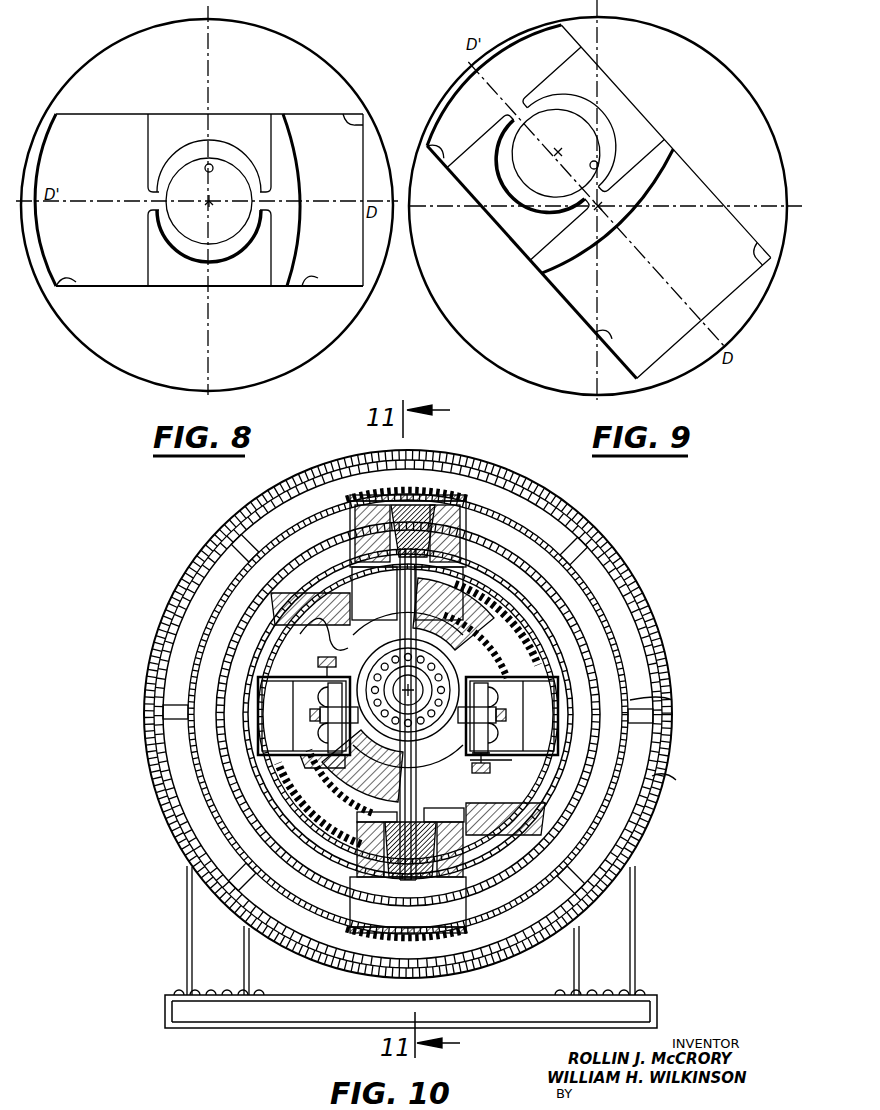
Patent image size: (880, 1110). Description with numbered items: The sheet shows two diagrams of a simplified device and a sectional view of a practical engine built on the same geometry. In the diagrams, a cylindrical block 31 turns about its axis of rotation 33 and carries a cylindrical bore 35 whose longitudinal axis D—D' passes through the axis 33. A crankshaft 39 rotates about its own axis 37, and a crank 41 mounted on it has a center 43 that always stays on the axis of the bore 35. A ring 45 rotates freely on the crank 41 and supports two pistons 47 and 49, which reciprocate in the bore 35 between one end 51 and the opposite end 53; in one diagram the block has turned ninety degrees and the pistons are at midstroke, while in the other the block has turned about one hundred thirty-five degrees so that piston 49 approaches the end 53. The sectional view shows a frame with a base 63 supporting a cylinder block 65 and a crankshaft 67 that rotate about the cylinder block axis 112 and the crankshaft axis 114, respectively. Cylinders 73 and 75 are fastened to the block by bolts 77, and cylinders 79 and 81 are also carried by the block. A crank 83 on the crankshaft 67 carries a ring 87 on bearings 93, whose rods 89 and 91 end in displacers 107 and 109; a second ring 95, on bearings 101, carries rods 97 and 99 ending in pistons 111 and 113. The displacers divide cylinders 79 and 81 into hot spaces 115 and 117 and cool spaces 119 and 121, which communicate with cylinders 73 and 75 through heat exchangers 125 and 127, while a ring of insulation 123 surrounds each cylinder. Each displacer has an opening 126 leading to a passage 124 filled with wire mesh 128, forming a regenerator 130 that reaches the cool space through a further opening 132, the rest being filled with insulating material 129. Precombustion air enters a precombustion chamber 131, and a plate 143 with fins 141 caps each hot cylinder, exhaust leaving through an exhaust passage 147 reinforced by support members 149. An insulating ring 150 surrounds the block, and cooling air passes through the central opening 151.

In FIG. 8, the cylindrical block 31 is at (333, 52).
In FIG. 9, the cylindrical block 31 is at (727, 60).
In FIG. 8, the axis of rotation 33 is at (211, 205).
In FIG. 9, the axis of rotation 33 is at (601, 208).
In FIG. 8, the cylindrical bore 35 is at (308, 292).
In FIG. 9, the cylindrical bore 35 is at (580, 302).
In FIG. 8, the axis of rotation of the crankshaft 37 is at (213, 163).
In FIG. 9, the axis of rotation of the crankshaft 37 is at (603, 165).
In FIG. 8, the crankshaft 39 is at (205, 166).
In FIG. 9, the crankshaft 39 is at (591, 169).
In FIG. 8, the crank 41 is at (268, 186).
In FIG. 9, the crank 41 is at (517, 178).
In FIG. 8, the center of the crank 43 is at (209, 203).
In FIG. 9, the center of the crank 43 is at (585, 143).
In FIG. 8, the ring 45 is at (200, 250).
In FIG. 9, the ring 45 is at (625, 122).
In FIG. 8, the piston 47 is at (302, 196).
In FIG. 9, the piston 47 is at (666, 180).
In FIG. 8, the piston 49 is at (114, 160).
In FIG. 9, the piston 49 is at (503, 88).
In FIG. 8, the end of the bore 51 is at (344, 110).
In FIG. 9, the end of the bore 51 is at (740, 300).
In FIG. 8, the opposite end of the bore 53 is at (80, 290).
In FIG. 9, the opposite end of the bore 53 is at (527, 42).
In FIG. 10, the base 63 is at (636, 912).
In FIG. 10, the cylinder block 65 is at (310, 621).
In FIG. 10, the crankshaft 67 is at (403, 691).
In FIG. 10, the cylinder 73 is at (512, 768).
In FIG. 10, the cylinder 75 is at (280, 668).
In FIG. 10, the bolts 77 is at (490, 770).
In FIG. 10, the cylinder 79 is at (497, 529).
In FIG. 10, the cylinder 81 is at (470, 855).
In FIG. 10, the crank 83 is at (380, 752).
In FIG. 10, the ring 87 is at (455, 640).
In FIG. 10, the rod 89 is at (418, 625).
In FIG. 10, the rod 91 is at (425, 760).
In FIG. 10, the bearings 93 is at (441, 688).
In FIG. 10, the ring 95 is at (450, 758).
In FIG. 10, the rod 97 is at (476, 728).
In FIG. 10, the rod 99 is at (312, 734).
In FIG. 10, the bearings 101 is at (400, 760).
In FIG. 10, the displacer 107 is at (375, 572).
In FIG. 10, the displacer 109 is at (401, 713).
In FIG. 10, the piston 111 is at (536, 688).
In FIG. 10, the cylinder block axis 112 is at (411, 688).
In FIG. 10, the piston 113 is at (302, 710).
In FIG. 10, the crankshaft axis 114 is at (384, 658).
In FIG. 10, the hot space 115 is at (470, 490).
In FIG. 10, the hot space 117 is at (466, 900).
In FIG. 10, the cool space 119 is at (500, 565).
In FIG. 10, the cool space 121 is at (500, 806).
In FIG. 10, the ring of insulation 123 is at (352, 845).
In FIG. 10, the passage 124 is at (436, 924).
In FIG. 10, the heat exchanger 125 is at (518, 580).
In FIG. 10, the opening 126 is at (445, 935).
In FIG. 10, the heat exchanger 127 is at (335, 832).
In FIG. 10, the wire mesh 128 is at (440, 900).
In FIG. 10, the insulating material 129 is at (333, 882).
In FIG. 10, the regenerator 130 is at (395, 900).
In FIG. 10, the precombustion chamber 131 is at (190, 772).
In FIG. 10, the opening 132 is at (430, 812).
In FIG. 10, the fins 141 is at (540, 960).
In FIG. 10, the plate 143 is at (330, 955).
In FIG. 10, the exhaust passage 147 is at (215, 808).
In FIG. 10, the support members 149 is at (620, 848).
In FIG. 10, the ring of insulating material 150 is at (676, 690).
In FIG. 10, the central opening 151 is at (676, 784).